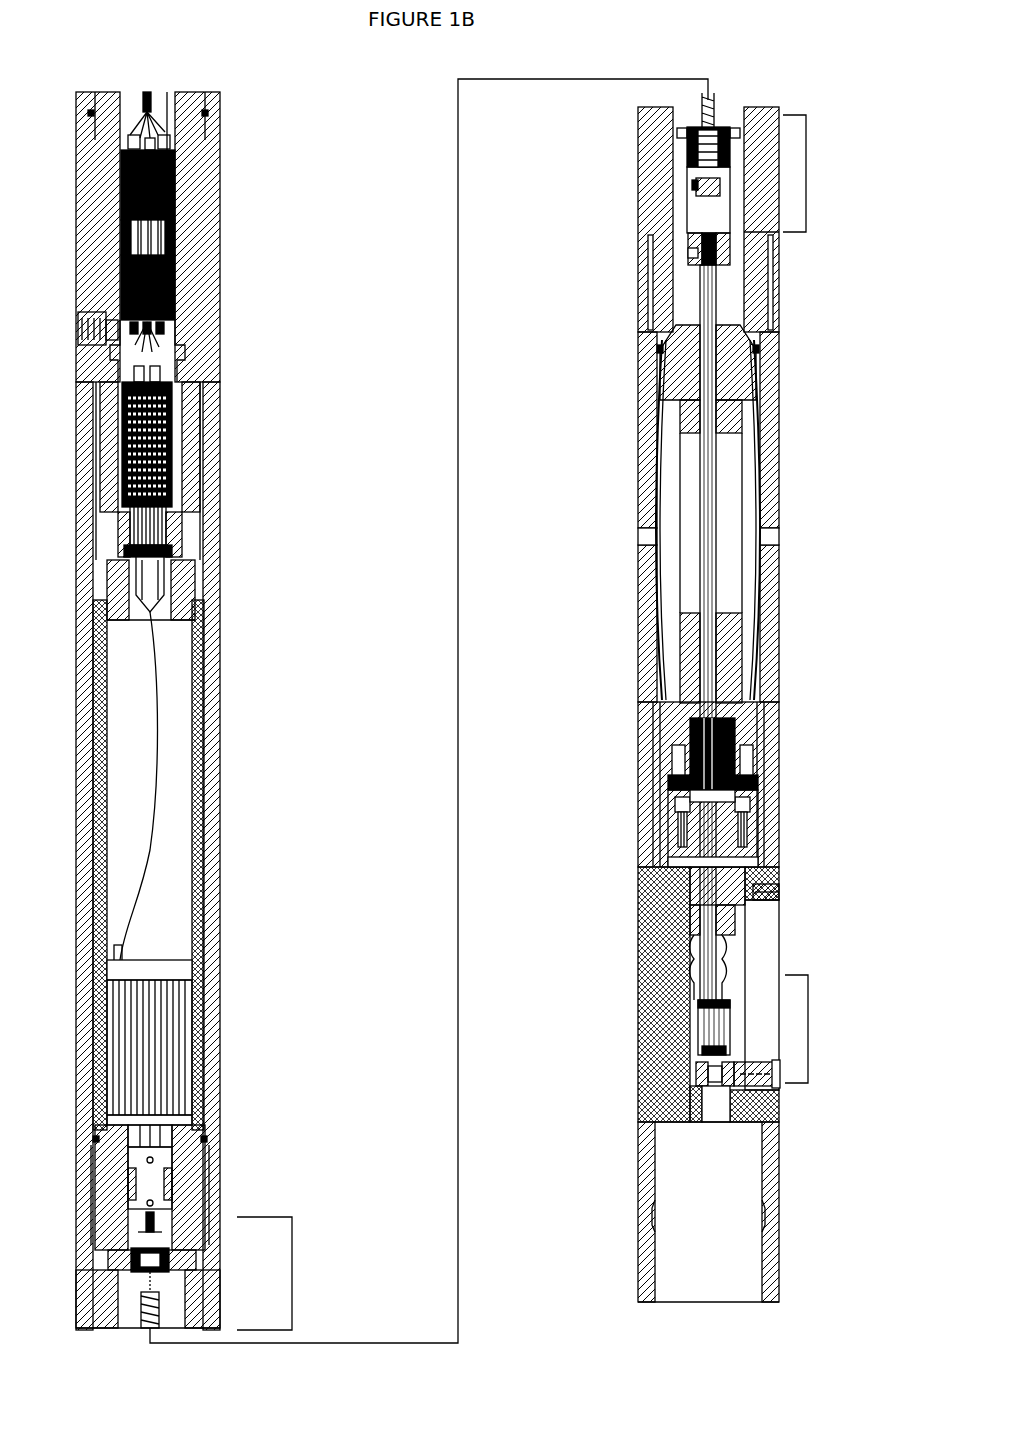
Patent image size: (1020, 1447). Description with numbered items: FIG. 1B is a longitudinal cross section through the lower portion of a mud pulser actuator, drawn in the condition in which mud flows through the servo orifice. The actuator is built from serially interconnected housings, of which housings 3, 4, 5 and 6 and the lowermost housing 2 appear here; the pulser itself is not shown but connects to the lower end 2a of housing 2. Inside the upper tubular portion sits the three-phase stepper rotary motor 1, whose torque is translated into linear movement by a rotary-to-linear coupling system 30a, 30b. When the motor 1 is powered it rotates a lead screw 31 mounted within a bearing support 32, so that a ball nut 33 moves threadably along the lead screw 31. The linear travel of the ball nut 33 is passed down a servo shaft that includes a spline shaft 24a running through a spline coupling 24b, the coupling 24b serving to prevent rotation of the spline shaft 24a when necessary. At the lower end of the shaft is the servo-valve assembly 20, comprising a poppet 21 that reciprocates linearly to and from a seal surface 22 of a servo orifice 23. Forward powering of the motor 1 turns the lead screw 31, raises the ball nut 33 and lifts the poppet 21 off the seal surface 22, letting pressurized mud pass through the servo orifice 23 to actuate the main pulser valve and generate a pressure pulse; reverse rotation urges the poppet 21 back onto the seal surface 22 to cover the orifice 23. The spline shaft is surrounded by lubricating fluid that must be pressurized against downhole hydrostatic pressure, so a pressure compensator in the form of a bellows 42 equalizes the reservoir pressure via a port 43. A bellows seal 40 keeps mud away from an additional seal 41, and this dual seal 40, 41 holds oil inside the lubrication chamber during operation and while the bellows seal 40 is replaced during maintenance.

The rotary motor 1 is at (150, 1052).
The lowermost housing 2 is at (665, 893).
The lower end of the lowermost housing 2a is at (655, 1158).
The housing 3 is at (645, 575).
The housing 4 is at (655, 173).
The housing 5 is at (205, 946).
The housing 6 is at (190, 237).
The servo-valve assembly 20 is at (808, 1028).
The poppet 21 is at (700, 1028).
The seal surface 22 is at (690, 1075).
The servo orifice 23 is at (712, 1110).
The spline shaft 24a is at (715, 635).
The spline coupling 24b is at (680, 740).
The rotary-to-linear coupling system 30a is at (292, 1272).
The rotary-to-linear coupling system 30b is at (806, 173).
The lead screw 31 is at (159, 1306).
The bearing support 32 is at (170, 1260).
The ball nut 33 is at (690, 147).
The bellows seal 40 is at (690, 940).
The additional seal 41 is at (680, 823).
The bellows 42 is at (765, 478).
The port 43 is at (785, 535).